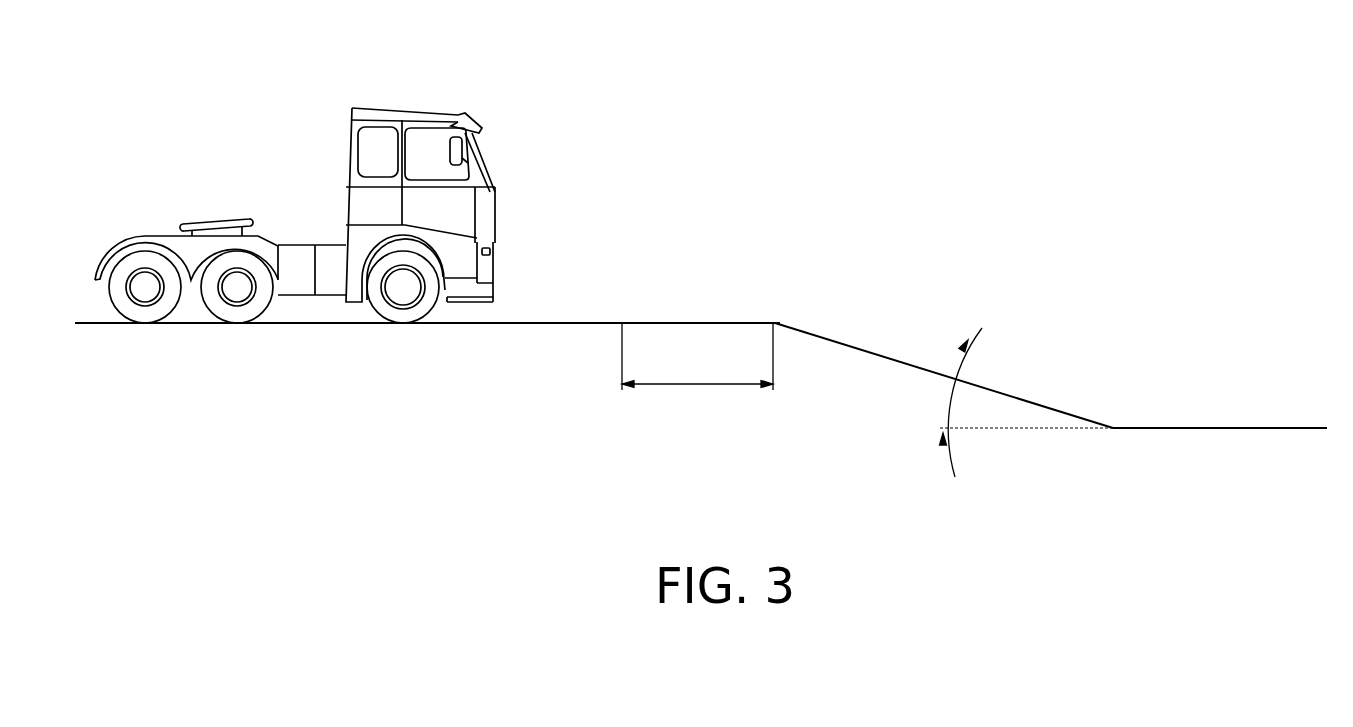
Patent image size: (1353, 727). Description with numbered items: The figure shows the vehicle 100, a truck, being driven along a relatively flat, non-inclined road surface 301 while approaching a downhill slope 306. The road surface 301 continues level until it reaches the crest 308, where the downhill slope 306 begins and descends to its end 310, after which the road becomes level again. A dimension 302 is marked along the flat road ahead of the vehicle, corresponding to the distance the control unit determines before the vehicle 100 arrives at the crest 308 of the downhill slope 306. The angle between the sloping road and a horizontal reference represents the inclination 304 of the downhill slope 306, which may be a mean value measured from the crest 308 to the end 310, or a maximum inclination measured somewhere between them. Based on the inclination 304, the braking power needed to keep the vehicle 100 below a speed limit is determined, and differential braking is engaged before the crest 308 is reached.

The vehicle 100 is at (453, 78).
The non-inclined road surface 301 is at (320, 323).
The distance to road gradient change 302 is at (697, 385).
The inclination 304 is at (946, 397).
The downhill slope 306 is at (1023, 400).
The crest 308 is at (775, 323).
The end 310 is at (1114, 427).